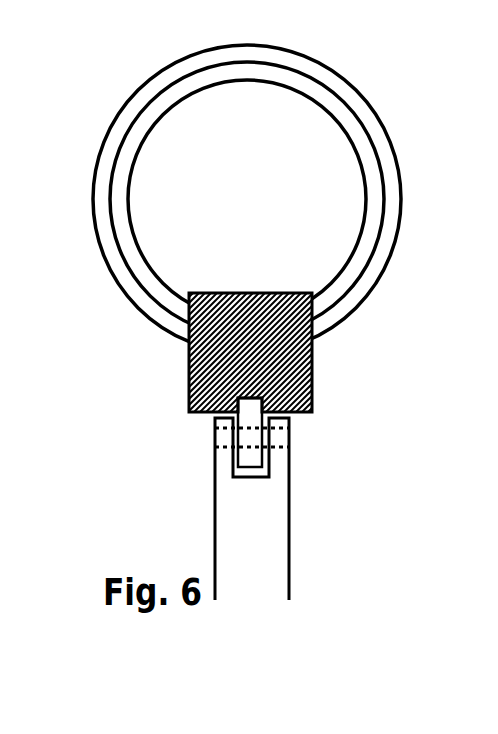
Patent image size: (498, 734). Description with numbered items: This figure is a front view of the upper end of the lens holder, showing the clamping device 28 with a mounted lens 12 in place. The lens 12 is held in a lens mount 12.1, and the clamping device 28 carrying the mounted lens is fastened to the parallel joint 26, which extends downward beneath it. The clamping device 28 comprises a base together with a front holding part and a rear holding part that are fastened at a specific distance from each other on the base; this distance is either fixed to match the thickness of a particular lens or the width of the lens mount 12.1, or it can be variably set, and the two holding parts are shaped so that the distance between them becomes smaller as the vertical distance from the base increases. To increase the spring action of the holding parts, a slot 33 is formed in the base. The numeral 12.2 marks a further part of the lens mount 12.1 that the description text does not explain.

The ring 12 is at (193, 225).
The outer ring layer 12.1 is at (96, 146).
The inner ring layer 12.2 is at (183, 199).
The element 33 is at (0, 368).
The mounting block 28 is at (189, 373).
The shaft 26 is at (181, 535).